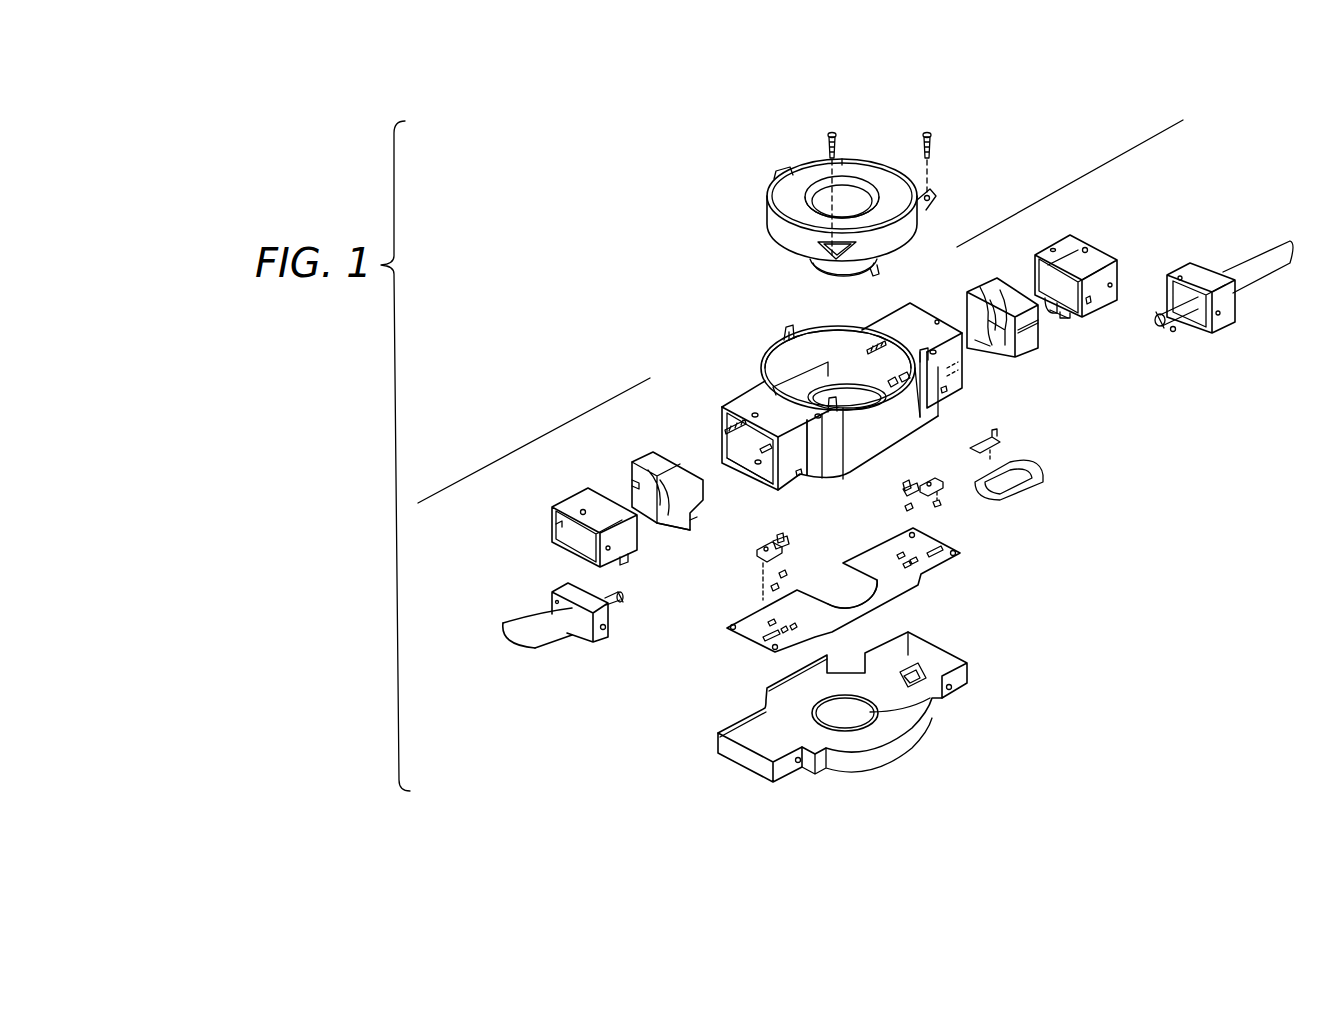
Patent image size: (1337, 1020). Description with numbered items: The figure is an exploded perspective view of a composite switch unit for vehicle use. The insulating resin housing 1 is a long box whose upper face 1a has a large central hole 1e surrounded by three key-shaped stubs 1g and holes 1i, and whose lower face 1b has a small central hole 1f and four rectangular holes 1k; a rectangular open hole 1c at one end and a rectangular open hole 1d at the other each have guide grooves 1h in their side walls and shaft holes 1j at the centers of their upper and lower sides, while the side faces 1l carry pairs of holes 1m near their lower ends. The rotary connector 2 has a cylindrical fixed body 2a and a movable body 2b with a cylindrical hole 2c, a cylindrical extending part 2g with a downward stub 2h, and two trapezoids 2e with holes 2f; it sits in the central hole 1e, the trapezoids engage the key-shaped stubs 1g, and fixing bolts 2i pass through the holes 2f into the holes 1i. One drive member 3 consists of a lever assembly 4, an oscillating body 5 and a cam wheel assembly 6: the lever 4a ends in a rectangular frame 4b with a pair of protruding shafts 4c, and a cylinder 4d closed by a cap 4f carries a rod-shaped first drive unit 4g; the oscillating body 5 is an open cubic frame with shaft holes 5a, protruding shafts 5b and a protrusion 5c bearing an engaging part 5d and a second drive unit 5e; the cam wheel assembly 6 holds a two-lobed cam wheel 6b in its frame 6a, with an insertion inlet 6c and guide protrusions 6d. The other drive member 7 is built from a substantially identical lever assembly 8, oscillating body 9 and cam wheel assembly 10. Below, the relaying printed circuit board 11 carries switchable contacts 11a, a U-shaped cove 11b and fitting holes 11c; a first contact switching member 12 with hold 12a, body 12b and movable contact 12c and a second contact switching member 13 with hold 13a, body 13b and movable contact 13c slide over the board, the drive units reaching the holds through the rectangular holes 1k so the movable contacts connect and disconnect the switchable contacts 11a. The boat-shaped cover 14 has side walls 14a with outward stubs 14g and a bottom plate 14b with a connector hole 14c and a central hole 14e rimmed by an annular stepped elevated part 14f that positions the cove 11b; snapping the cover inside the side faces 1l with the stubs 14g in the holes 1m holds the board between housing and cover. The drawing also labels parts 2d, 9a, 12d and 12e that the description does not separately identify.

The housing 1 is at (770, 476).
The upper face 1a is at (760, 392).
The lower face 1b is at (748, 466).
The rectangular open hole 1c is at (868, 330).
The rectangular open hole 1d is at (726, 420).
The central hole 1e is at (772, 360).
The central hole 1f is at (884, 405).
The key-shaped stubs 1g is at (784, 330).
The guide grooves 1h is at (726, 431).
The holes 1i is at (814, 415).
The shaft holes 1j is at (752, 413).
The rectangular holes 1k is at (758, 449).
The side faces 1l is at (760, 370).
The holes 1m is at (800, 476).
The rotary connector 2 is at (858, 160).
The fixed body 2a is at (908, 228).
The movable body 2b is at (875, 172).
The cylindrical hole 2c is at (845, 190).
The tab 2d is at (782, 168).
The trapezoids 2e is at (932, 201).
The hole 2f is at (932, 190).
The extending part 2g is at (838, 270).
The stub 2h is at (878, 271).
The fixing bolts 2i is at (830, 133).
The drive member 3 is at (1068, 188).
The lever assembly 4 is at (1205, 275).
The lever 4a is at (1258, 278).
The rectangular frame 4b is at (1214, 322).
The protruding shafts 4c is at (1182, 275).
The cylinder 4d is at (1190, 308).
The cap 4f is at (1158, 326).
The first drive unit 4g is at (1175, 333).
The oscillating body 5 is at (1084, 240).
The shaft holes 5a is at (1051, 249).
The protruding shafts 5b is at (1089, 250).
The protrusion 5c is at (1050, 314).
The engaging part 5d is at (1062, 316).
The second drive unit 5e is at (1072, 317).
The cam wheel assembly 6 is at (997, 283).
The frame 6a is at (982, 288).
The cam wheel 6b is at (1000, 310).
The insertion inlet 6c is at (1000, 355).
The guide protrusions 6d is at (1035, 332).
The drive member 7 is at (528, 443).
The lever assembly 8 is at (548, 648).
The oscillating body 9 is at (574, 500).
The case lug 9a is at (628, 562).
The cam wheel assembly 10 is at (645, 452).
The relaying printed circuit board 11 is at (932, 585).
The switchable contacts 11a is at (782, 620).
The U-shaped cove 11b is at (853, 595).
The fitting holes 11c is at (731, 631).
The first contact switching member 12 is at (983, 512).
The hold 12a is at (932, 480).
The body 12b is at (941, 482).
The movable contact 12c is at (941, 503).
The contact block 12d is at (1000, 443).
The contact plate 12e is at (1044, 478).
The second contact switching member 13 is at (878, 513).
The hold 13a is at (902, 485).
The body 13b is at (905, 492).
The movable contact 13c is at (907, 510).
The cover 14 is at (900, 748).
The side walls 14a is at (968, 672).
The bottom plate 14b is at (910, 668).
The connector hole 14c is at (920, 677).
The central hole 14e is at (878, 712).
The stepped elevated part 14f is at (845, 710).
The stubs 14g is at (953, 690).